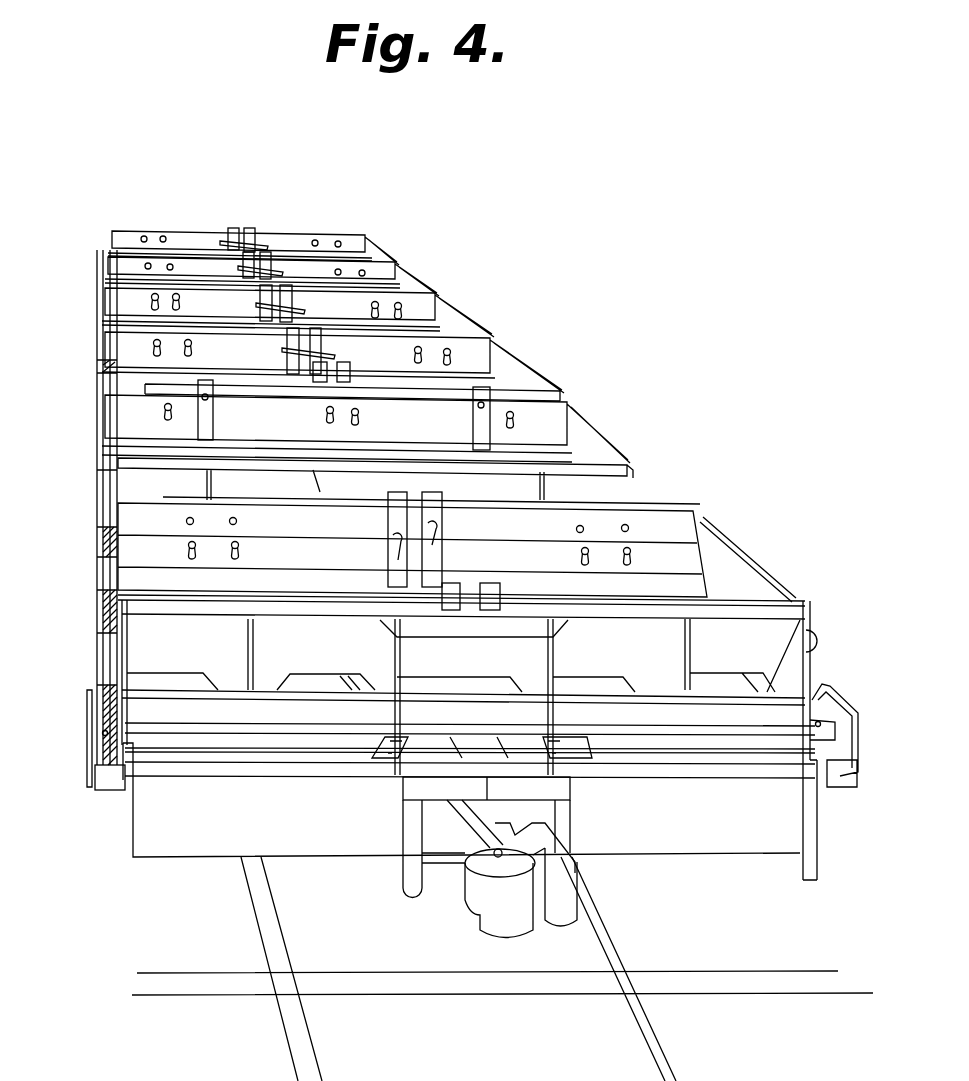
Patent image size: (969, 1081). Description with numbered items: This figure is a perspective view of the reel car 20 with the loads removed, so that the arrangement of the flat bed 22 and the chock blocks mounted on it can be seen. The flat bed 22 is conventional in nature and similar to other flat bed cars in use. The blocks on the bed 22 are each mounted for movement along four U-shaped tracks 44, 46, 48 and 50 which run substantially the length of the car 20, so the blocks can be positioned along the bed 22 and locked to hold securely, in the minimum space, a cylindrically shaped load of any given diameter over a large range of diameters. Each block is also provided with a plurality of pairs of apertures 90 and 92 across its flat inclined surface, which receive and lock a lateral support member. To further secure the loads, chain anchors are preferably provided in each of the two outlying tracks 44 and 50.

The reel car 20 is at (451, 654).
The flat bed 22 is at (97, 576).
The U-shaped track 44 is at (110, 785).
The U-shaped track 46 is at (384, 747).
The U-shaped track 48 is at (556, 747).
The U-shaped track 50 is at (836, 760).
The aperture 90 is at (186, 521).
The aperture 92 is at (188, 548).